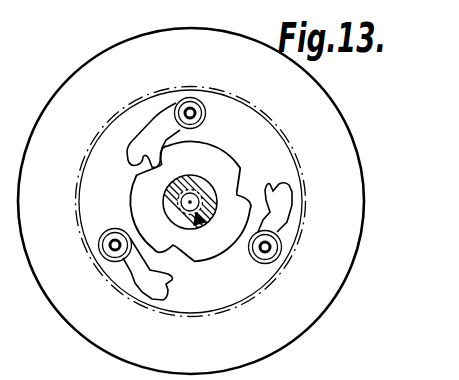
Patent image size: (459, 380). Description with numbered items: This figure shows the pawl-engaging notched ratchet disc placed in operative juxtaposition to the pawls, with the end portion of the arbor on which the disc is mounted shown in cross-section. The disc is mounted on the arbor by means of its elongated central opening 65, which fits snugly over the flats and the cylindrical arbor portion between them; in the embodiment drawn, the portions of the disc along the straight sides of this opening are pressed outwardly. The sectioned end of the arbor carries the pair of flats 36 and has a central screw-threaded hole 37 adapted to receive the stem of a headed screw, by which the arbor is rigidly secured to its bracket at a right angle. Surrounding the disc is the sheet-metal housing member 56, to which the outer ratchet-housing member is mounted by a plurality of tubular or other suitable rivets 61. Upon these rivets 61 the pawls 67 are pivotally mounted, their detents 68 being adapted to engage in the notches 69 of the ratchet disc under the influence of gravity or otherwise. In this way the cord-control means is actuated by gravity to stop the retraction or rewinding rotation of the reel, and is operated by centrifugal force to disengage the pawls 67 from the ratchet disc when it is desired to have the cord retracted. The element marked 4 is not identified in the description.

The sheet-metal housing member 56 is at (309, 318).
The rivets 61 is at (193, 112).
The elongated central opening 65 is at (238, 212).
The pawls 67 is at (157, 117).
The detents 68 is at (134, 145).
The notches 69 is at (248, 168).
The central screw-threaded hole 37 is at (204, 186).
The flats 36 is at (198, 226).
The shaft bore 4 is at (178, 219).